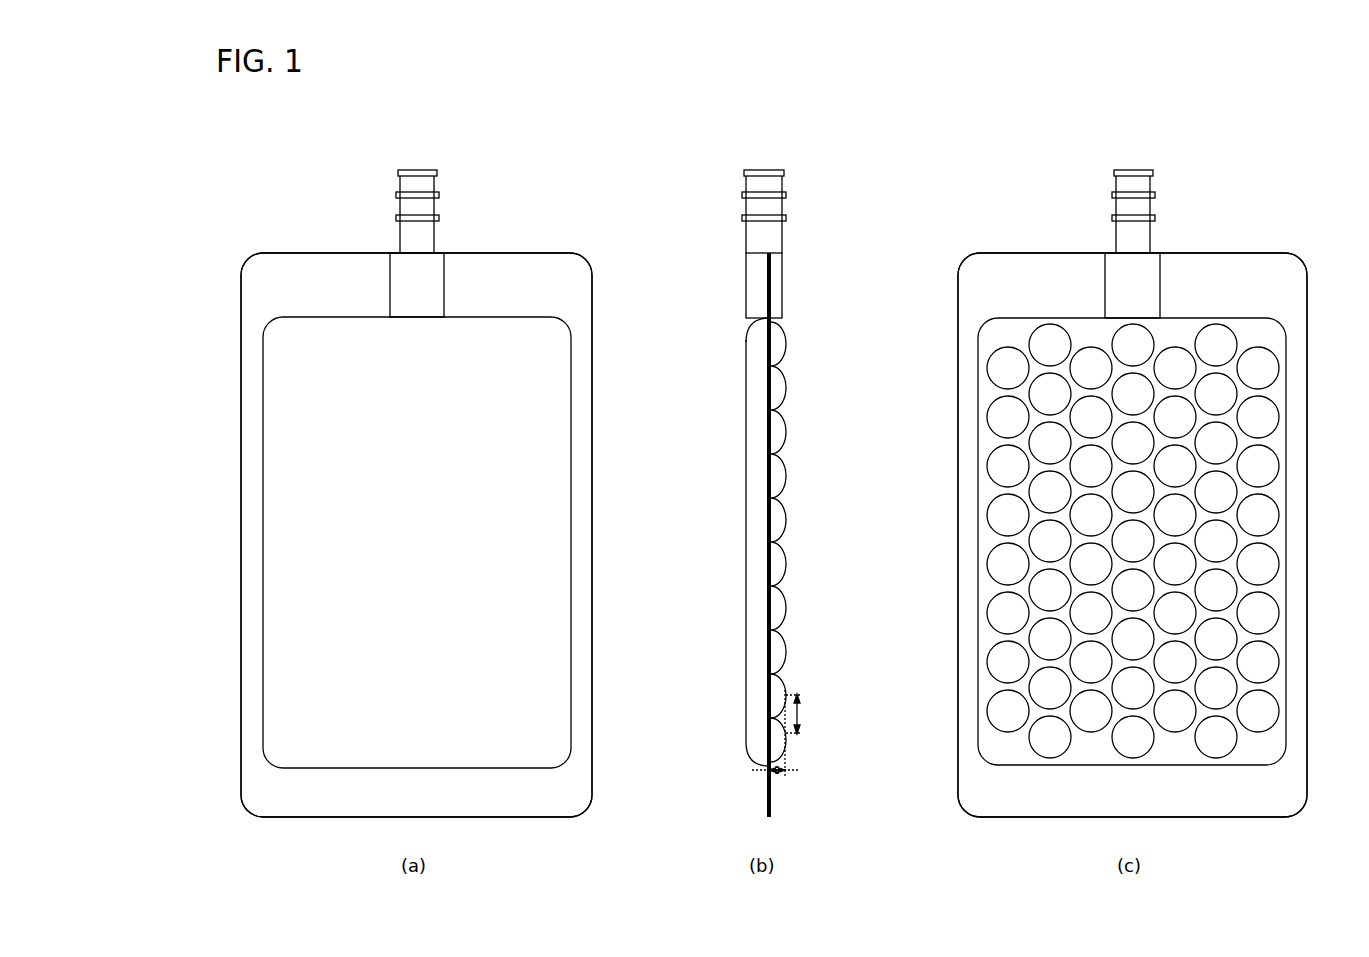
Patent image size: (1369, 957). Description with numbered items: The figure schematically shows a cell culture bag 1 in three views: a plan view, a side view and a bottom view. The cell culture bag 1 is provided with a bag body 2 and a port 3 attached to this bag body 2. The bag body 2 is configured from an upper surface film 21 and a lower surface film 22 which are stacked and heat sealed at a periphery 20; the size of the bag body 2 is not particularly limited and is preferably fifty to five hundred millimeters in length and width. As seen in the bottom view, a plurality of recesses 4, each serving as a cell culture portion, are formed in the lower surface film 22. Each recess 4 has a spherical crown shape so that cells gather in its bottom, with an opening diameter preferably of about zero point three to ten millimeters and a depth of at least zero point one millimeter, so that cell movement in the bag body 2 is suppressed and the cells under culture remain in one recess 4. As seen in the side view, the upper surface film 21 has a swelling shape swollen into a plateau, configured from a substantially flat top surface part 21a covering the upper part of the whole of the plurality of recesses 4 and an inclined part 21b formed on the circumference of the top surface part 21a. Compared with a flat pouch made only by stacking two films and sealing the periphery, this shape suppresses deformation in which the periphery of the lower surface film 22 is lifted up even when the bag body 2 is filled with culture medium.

The cell culture bag 1 is at (578, 174).
The bag body 2 is at (290, 797).
The port 3 is at (408, 208).
The recess 4 is at (786, 613).
The periphery 20 is at (527, 786).
The upper surface film 21 is at (290, 525).
The top surface part 21a is at (747, 578).
The inclined part 21b is at (758, 765).
The lower surface film 22 is at (786, 446).